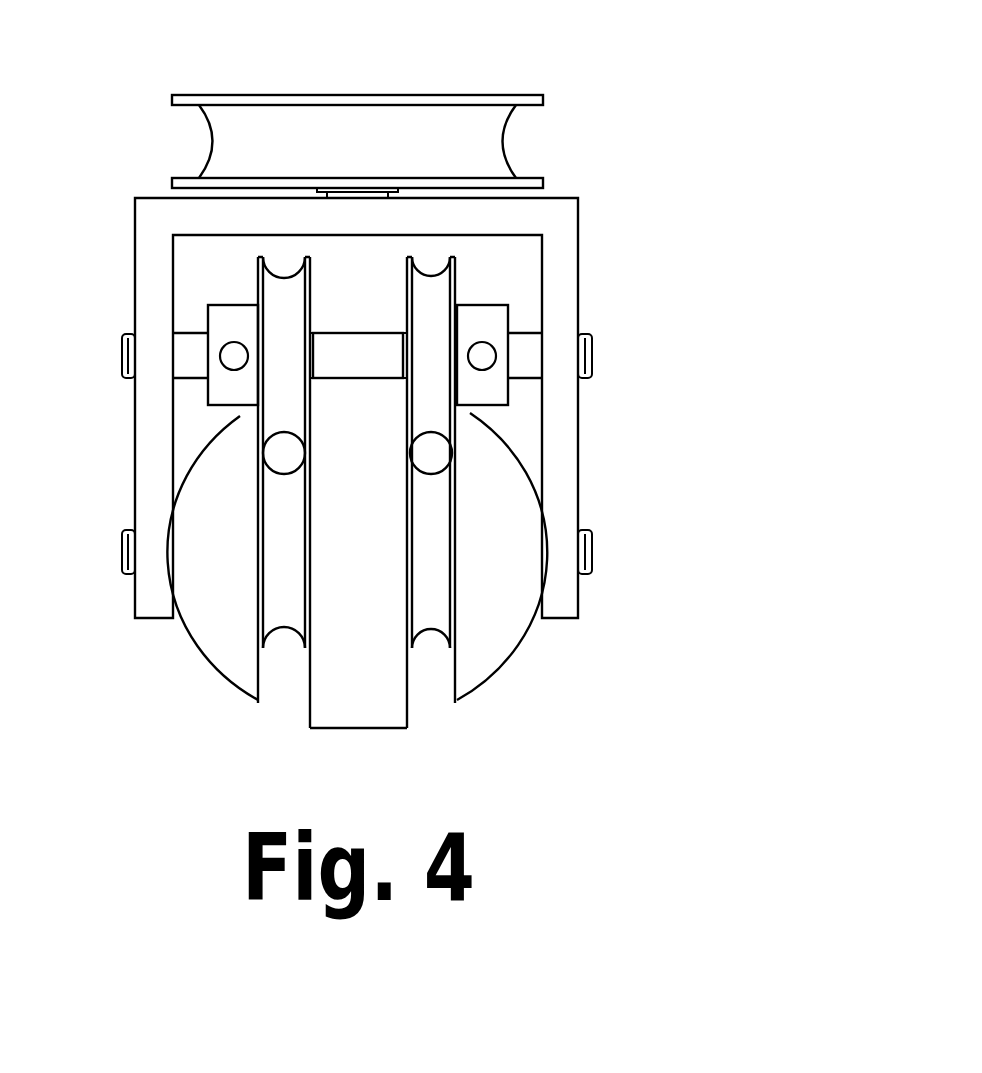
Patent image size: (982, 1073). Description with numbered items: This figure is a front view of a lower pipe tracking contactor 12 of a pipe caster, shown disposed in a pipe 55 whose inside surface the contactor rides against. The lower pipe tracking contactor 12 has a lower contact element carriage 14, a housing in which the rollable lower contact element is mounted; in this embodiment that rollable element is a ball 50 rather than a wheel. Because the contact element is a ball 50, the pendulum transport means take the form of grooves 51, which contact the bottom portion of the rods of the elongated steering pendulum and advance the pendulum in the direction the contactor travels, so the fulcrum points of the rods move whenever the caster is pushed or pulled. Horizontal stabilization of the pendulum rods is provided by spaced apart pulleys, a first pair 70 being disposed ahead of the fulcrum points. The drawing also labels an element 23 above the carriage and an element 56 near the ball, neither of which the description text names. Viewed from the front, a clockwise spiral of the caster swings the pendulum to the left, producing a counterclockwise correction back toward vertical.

The lower pipe tracking contactor 12 is at (685, 105).
The lower contact element carriage 14 is at (580, 270).
The upper pulley 23 is at (490, 94).
The ball 50 is at (502, 659).
The grooves 51 is at (276, 678).
The pipe 55 is at (430, 433).
The pin 56 is at (275, 430).
The first pair of pulleys 70 is at (600, 172).